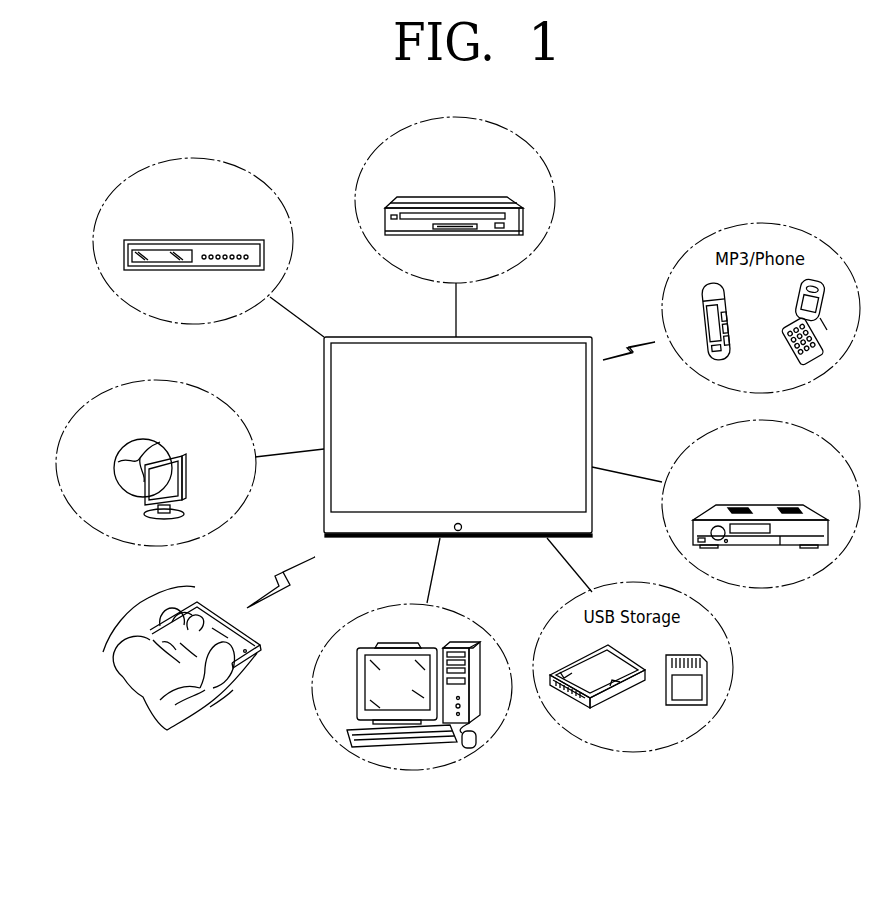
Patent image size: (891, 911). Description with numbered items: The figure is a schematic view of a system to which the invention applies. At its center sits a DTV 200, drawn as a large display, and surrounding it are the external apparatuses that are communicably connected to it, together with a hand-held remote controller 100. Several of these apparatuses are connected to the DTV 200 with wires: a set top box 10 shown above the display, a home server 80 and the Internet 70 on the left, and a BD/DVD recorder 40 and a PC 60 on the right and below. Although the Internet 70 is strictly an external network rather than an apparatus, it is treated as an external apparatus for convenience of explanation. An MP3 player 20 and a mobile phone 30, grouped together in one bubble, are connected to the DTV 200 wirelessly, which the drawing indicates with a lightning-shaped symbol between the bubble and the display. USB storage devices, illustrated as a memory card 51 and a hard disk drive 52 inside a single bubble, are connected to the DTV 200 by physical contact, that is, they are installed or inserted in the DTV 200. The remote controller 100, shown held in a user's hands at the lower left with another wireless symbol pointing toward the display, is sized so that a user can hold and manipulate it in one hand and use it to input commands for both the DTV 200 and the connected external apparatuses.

The set top box 10 is at (398, 130).
The MP3 player 20 is at (710, 282).
The mobile phone 30 is at (820, 276).
The BD/DVD recorder 40 is at (812, 509).
The USB storage 51 is at (685, 707).
The hard disk drive (USB storage) 52 is at (617, 697).
The PC 60 is at (402, 770).
The Internet 70 is at (99, 395).
The home server 80 is at (137, 172).
The remote controller 100 is at (222, 610).
The DTV 200 is at (550, 337).